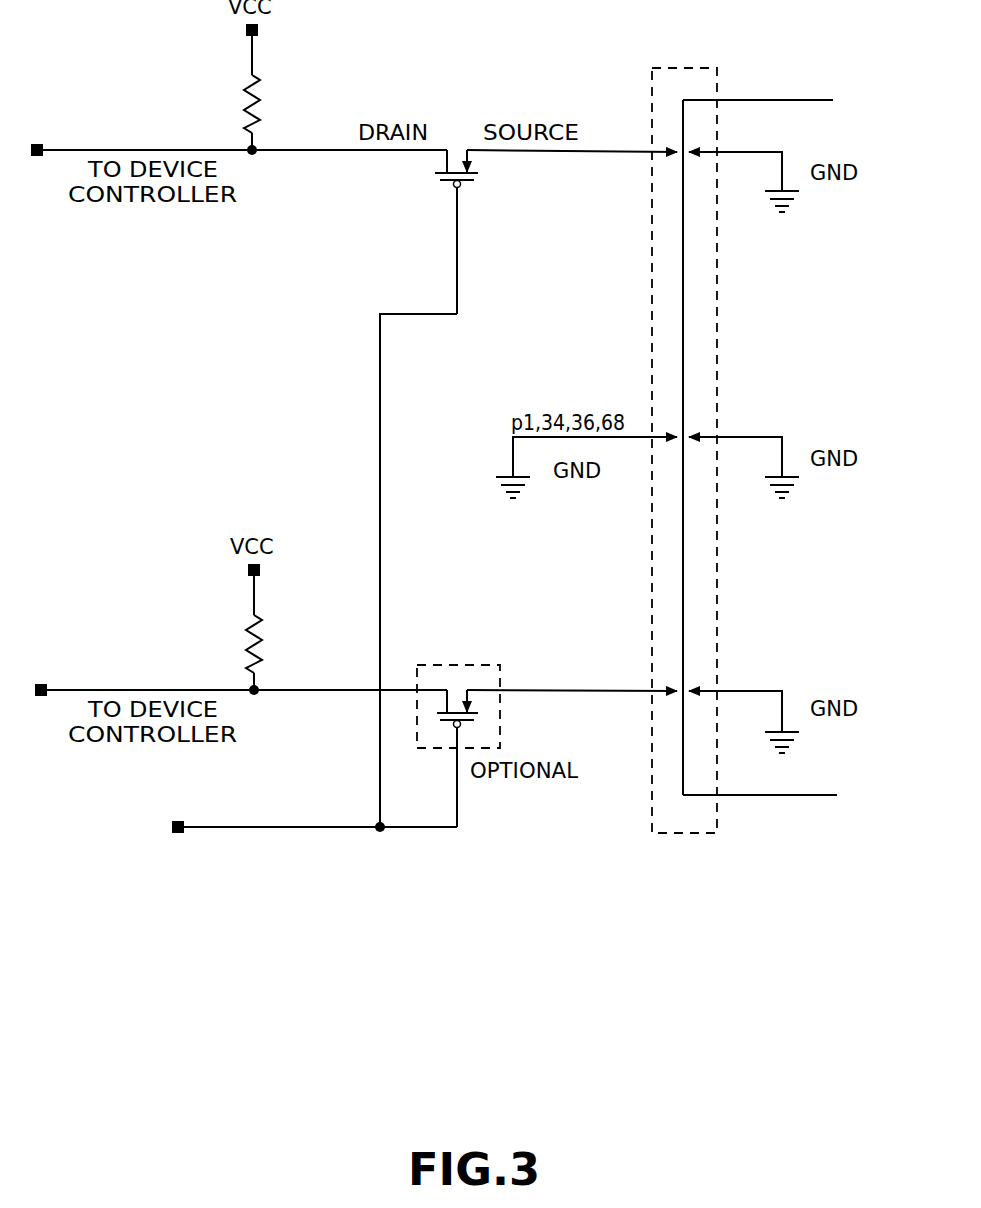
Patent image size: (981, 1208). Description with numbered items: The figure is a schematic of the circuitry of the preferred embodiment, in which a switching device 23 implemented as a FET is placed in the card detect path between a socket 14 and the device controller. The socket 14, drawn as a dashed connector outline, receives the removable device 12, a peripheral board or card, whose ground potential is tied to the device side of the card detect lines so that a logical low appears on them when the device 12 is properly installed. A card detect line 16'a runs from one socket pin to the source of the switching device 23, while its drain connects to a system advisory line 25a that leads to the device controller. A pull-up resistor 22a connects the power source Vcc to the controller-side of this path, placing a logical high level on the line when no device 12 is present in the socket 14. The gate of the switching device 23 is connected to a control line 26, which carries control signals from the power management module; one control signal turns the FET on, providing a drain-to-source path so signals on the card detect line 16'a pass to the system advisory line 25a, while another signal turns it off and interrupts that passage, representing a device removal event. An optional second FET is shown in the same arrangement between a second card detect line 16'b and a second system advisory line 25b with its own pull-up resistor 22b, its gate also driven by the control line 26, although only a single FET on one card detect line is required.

The device 12 is at (778, 108).
The socket 14 is at (686, 68).
The card detect line 16'a is at (572, 122).
The card detect line 16'b is at (572, 661).
The pull-up resistor 22a is at (254, 78).
The pull-up resistor 22b is at (256, 618).
The switching device 23 is at (443, 164).
The system advisory line 25a is at (286, 150).
The system advisory line 25b is at (288, 690).
The control line 26 is at (288, 829).